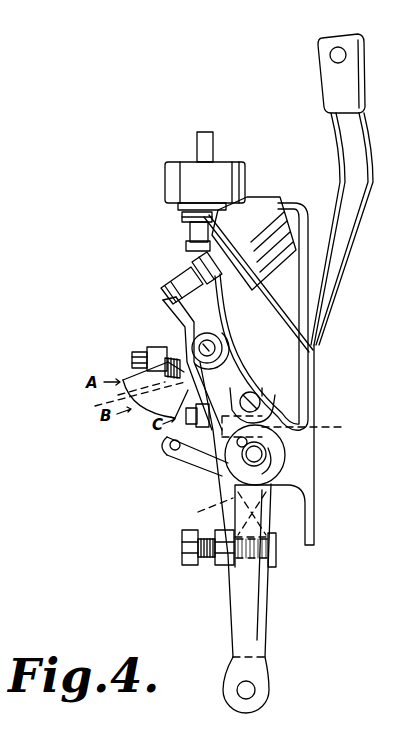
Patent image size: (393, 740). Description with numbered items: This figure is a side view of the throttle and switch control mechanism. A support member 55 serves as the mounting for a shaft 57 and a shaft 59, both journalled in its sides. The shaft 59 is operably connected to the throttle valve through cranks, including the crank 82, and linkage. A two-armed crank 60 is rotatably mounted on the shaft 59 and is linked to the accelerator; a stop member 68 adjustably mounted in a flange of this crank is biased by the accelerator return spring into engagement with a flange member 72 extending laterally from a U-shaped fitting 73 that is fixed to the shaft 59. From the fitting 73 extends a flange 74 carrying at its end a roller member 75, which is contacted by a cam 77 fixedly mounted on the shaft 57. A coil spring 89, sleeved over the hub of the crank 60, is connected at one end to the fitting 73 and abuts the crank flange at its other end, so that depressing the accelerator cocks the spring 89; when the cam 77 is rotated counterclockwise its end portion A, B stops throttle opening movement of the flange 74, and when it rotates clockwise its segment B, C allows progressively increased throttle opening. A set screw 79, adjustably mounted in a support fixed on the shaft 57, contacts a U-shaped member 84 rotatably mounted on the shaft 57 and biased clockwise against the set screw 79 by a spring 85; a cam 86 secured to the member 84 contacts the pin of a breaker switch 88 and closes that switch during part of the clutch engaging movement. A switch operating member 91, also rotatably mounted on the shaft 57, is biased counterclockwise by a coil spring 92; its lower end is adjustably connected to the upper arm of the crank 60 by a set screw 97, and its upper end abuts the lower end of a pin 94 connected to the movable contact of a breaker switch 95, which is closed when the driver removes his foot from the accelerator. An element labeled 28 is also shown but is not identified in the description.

The crank 82 is at (347, 137).
The breaker switch 88 is at (224, 172).
The pin 94 is at (168, 300).
The breaker switch 95 is at (250, 218).
The cam 86 is at (240, 300).
The spring 85 is at (222, 318).
The support member 55 is at (312, 442).
The switch operating member 91 is at (173, 323).
The shaft 57 is at (203, 347).
The set screw 79 is at (137, 356).
The cam 77 is at (127, 380).
The U-shaped member 84 is at (122, 400).
The set screw 97 is at (184, 421).
The flange 74 is at (197, 459).
The roller member 75 is at (170, 450).
The shaft 59 is at (247, 462).
The two-armed crank 60 is at (252, 610).
The bracket 28 is at (243, 380).
The coil spring 92 is at (242, 343).
The U-shaped fitting 73 is at (317, 428).
The coil spring 89 is at (200, 514).
The stop member 68 is at (207, 558).
The flange member 72 is at (276, 560).